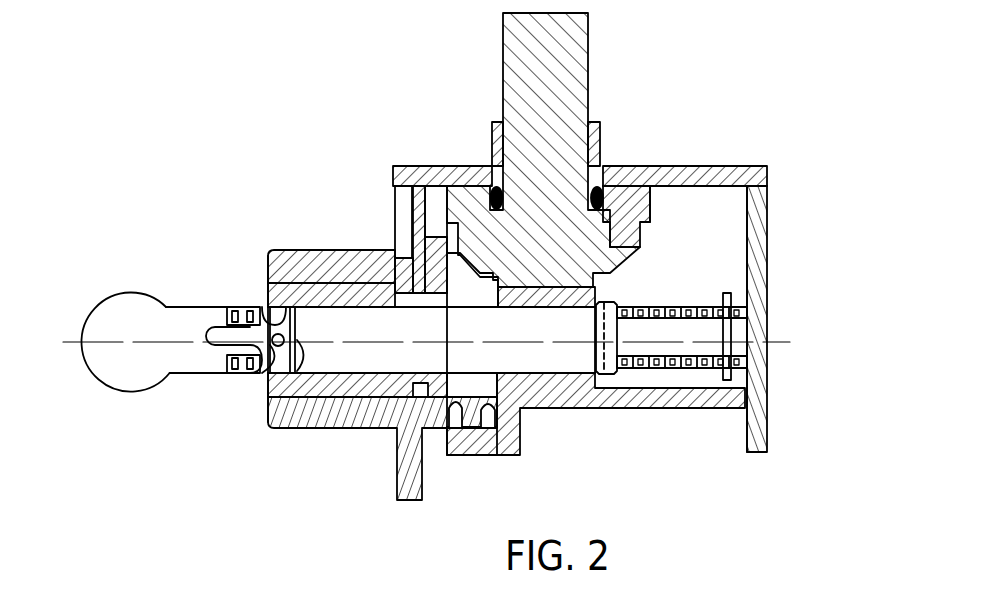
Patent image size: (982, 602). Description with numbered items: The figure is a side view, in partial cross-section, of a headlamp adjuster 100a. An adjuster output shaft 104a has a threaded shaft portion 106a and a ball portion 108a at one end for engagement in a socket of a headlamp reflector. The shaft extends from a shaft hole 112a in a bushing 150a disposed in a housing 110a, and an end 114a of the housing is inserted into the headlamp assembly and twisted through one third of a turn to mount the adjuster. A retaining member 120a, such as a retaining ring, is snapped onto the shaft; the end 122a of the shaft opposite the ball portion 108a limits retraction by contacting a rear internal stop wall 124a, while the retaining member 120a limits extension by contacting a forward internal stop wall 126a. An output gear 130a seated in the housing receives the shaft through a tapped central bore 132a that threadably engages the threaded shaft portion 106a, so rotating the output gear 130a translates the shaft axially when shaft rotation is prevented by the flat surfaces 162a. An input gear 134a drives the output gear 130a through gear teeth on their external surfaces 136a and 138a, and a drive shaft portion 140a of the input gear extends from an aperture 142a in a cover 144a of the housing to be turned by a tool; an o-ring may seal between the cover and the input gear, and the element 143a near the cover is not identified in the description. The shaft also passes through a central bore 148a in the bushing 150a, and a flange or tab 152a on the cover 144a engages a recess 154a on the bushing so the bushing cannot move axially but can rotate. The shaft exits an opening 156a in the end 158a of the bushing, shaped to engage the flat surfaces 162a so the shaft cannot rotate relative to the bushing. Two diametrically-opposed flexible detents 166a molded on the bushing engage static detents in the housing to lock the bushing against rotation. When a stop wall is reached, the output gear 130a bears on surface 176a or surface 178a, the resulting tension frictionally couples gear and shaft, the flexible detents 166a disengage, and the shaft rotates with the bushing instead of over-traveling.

The headlamp adjuster 100a is at (355, 456).
The adjuster output shaft 104a is at (668, 302).
The threaded shaft portion 106a is at (652, 376).
The ball portion 108a is at (129, 306).
The housing 110a is at (537, 410).
The shaft hole 112a is at (270, 350).
The end of the housing 114a is at (270, 262).
The retaining member 120a is at (750, 290).
The end of the adjuster output shaft 122a is at (748, 340).
The rear internal stop wall 124a is at (747, 296).
The forward internal stop wall 126a is at (600, 376).
The output gear 130a is at (490, 402).
The central bore of the output gear 132a is at (378, 268).
The input gear 134a is at (652, 220).
The external surface of the input gear 136a is at (642, 246).
The external surface of the output gear 138a is at (441, 170).
The drive shaft portion 140a is at (590, 85).
The aperture in the cover 142a is at (600, 108).
The bonnet recess 143a is at (627, 164).
The cover 144a is at (410, 164).
The central bore of the bushing 148a is at (333, 374).
The bushing 150a is at (283, 404).
The flange or tab on the cover 152a is at (397, 262).
The recess on the bushing 154a is at (395, 438).
The opening in the end of the bushing 156a is at (260, 306).
The end of the bushing 158a is at (247, 298).
The flat surfaces 162a is at (226, 344).
The flexible detents 166a is at (268, 375).
The bearing surface 176a is at (472, 403).
The bearing surface 178a is at (463, 398).